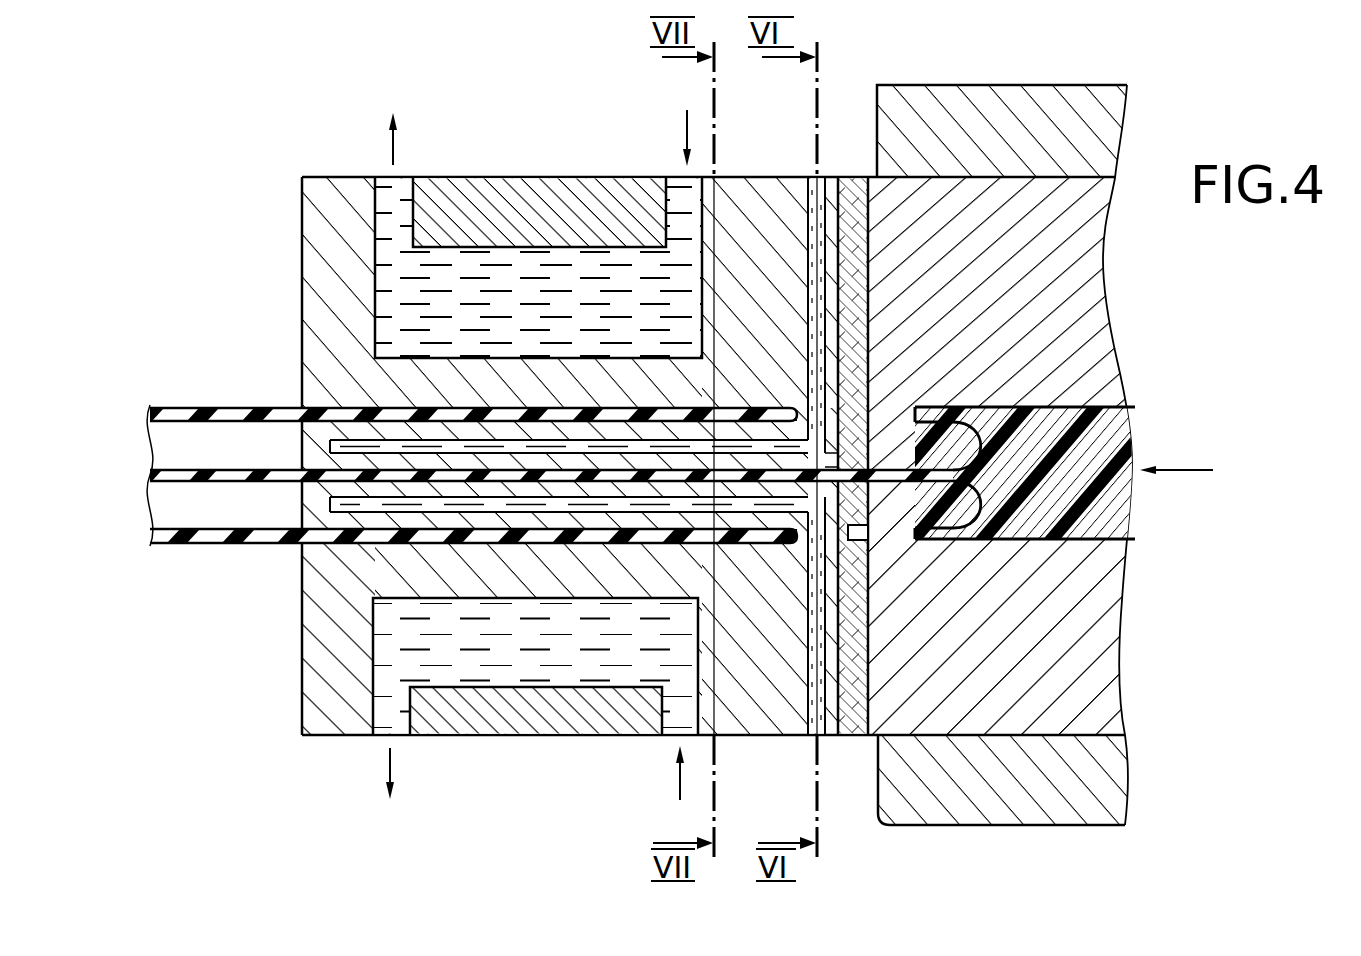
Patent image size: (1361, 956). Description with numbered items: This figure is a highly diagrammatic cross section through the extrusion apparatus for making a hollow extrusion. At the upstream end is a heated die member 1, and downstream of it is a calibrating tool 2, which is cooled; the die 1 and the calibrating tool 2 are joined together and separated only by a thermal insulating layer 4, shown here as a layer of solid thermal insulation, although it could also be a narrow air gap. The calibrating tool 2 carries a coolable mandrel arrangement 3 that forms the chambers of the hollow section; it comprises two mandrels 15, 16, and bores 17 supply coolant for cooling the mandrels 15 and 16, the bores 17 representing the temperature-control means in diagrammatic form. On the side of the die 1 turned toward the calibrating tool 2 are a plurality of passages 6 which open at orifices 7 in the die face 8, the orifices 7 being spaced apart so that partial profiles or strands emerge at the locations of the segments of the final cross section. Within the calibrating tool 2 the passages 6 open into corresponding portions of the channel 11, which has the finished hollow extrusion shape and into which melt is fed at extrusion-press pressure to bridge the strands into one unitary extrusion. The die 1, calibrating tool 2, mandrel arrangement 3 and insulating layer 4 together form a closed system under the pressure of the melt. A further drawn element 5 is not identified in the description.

The heated die member 1 is at (1148, 728).
The calibrating tool 2 is at (315, 692).
The coolable mandrel arrangement 3 is at (328, 548).
The thermal insulating layer 4 is at (854, 746).
The valve seat insert 5 is at (1117, 447).
The passages 6 is at (917, 407).
The orifices 7 is at (843, 360).
The die face 8 is at (870, 638).
The channel 11 is at (522, 410).
The mandrel 15 is at (347, 443).
The mandrel 16 is at (330, 498).
The bores 17 is at (351, 447).